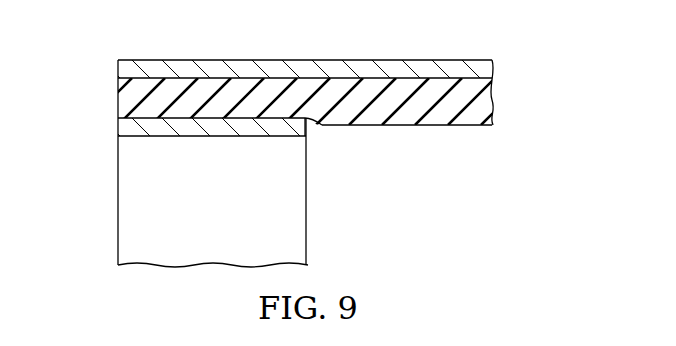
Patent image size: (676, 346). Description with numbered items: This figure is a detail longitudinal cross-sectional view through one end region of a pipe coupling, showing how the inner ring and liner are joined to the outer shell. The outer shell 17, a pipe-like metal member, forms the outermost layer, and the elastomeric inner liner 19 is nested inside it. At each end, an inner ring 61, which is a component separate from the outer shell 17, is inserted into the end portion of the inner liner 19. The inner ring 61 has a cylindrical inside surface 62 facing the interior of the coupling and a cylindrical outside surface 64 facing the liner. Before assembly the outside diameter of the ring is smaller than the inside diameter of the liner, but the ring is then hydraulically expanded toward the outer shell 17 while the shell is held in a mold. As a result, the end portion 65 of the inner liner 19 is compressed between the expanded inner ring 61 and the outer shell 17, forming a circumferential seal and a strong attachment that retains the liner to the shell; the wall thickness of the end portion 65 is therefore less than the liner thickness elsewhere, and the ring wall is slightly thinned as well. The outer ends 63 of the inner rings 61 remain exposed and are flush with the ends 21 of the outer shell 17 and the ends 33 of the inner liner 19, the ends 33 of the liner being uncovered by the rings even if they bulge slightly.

The outer shell 17 is at (420, 60).
The inner liner 19 is at (413, 126).
The ends of outer shell 21 is at (118, 72).
The ends of inner liner 33 is at (118, 96).
The inner ring 61 is at (118, 192).
The cylindrical inside surface 62 is at (205, 137).
The outer ends of inner rings 63 is at (118, 127).
The cylindrical outside surface 64 is at (118, 109).
The end portions of inner liner 65 is at (215, 86).